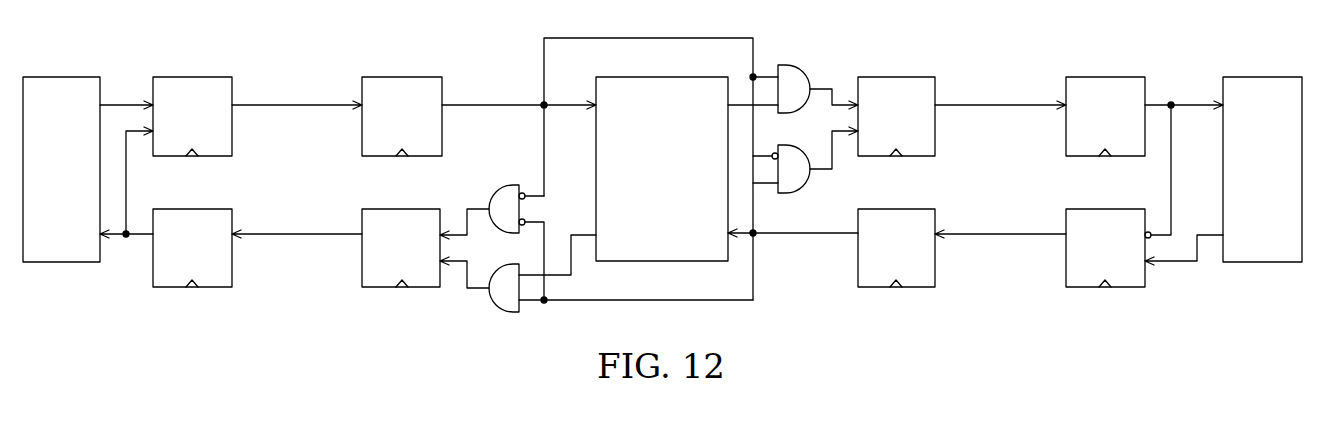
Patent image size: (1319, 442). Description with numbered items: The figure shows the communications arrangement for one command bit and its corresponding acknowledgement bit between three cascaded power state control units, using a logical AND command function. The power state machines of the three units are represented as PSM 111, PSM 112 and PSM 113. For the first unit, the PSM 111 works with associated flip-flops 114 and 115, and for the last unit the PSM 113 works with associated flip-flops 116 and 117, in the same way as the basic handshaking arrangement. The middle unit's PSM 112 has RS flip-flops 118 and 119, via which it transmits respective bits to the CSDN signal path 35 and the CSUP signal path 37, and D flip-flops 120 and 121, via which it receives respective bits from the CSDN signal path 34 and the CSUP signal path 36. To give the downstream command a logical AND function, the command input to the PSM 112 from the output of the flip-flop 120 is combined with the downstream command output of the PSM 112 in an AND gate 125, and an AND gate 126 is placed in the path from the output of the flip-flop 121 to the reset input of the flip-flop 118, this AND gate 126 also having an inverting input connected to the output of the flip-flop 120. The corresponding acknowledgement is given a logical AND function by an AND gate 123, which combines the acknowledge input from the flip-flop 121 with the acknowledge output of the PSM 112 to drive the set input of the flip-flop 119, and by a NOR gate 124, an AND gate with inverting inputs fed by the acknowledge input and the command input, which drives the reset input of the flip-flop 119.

The PSM 111 is at (50, 81).
The PSM 112 is at (646, 181).
The PSM 113 is at (1275, 88).
The flip-flop 114 is at (194, 83).
The flip-flop 115 is at (210, 283).
The flip-flop 116 is at (1083, 283).
The flip-flop 117 is at (1103, 85).
The RS flip-flop 118 is at (910, 83).
The RS flip-flop 119 is at (378, 283).
The D flip-flop 120 is at (400, 85).
The D flip-flop 121 is at (915, 283).
The AND gate 123 is at (500, 298).
The NOR gate 124 is at (500, 195).
The AND gate 125 is at (800, 77).
The AND gate 126 is at (798, 181).
The CSDN signal path 34 is at (290, 105).
The CSDN signal path 35 is at (995, 105).
The CSUP signal path 36 is at (1008, 235).
The CSUP signal path 37 is at (302, 235).